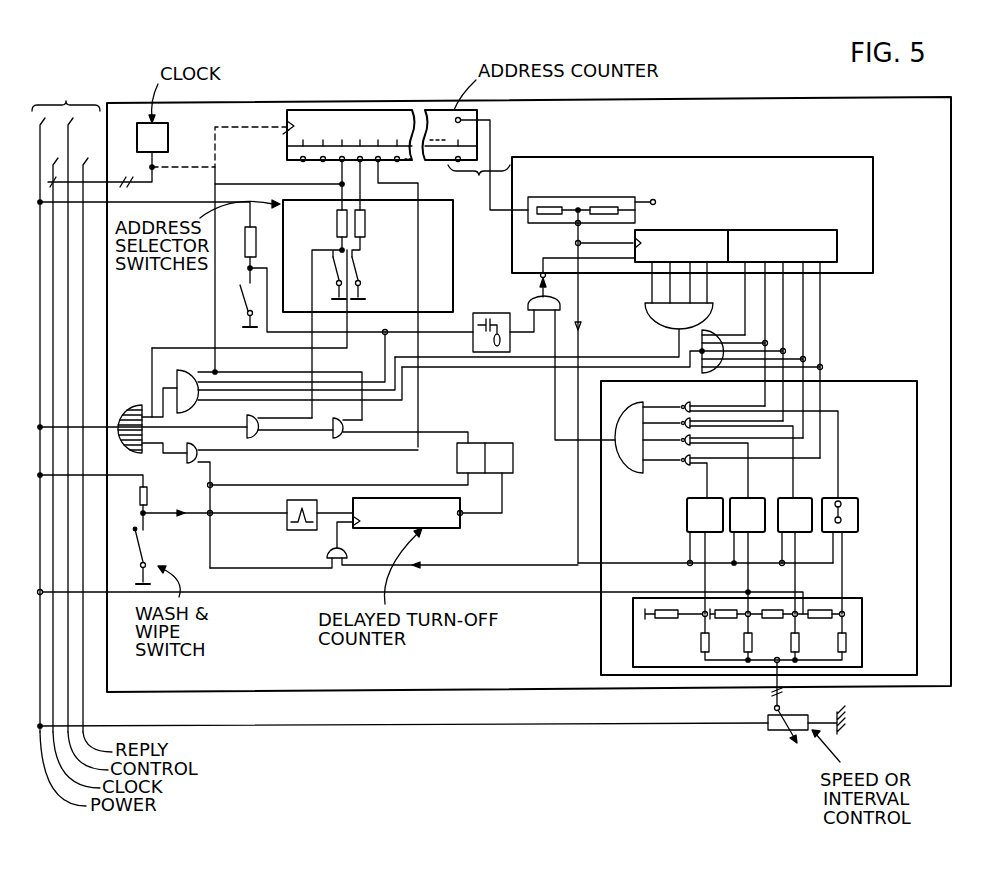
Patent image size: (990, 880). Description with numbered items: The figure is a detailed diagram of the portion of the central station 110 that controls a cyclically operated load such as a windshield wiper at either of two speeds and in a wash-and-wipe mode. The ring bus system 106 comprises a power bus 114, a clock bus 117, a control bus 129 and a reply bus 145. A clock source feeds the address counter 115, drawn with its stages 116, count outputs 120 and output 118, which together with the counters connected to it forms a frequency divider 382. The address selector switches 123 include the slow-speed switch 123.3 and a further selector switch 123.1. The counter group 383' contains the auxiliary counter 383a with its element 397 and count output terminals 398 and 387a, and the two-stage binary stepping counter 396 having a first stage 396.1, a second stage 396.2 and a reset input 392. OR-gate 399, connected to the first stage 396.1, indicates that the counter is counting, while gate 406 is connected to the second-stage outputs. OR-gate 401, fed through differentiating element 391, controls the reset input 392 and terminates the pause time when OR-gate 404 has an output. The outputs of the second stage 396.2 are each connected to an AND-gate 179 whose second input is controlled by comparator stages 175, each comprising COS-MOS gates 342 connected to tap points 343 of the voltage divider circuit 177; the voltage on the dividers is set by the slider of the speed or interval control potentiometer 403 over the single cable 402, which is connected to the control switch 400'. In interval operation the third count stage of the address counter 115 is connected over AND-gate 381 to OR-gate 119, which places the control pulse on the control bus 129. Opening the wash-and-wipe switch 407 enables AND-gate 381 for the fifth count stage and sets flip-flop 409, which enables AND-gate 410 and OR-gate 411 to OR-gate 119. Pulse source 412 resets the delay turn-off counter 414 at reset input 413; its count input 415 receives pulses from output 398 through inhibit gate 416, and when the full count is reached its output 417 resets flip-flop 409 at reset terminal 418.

The central station 110 is at (140, 687).
The power bus 114 is at (46, 420).
The clock bus 117 is at (58, 437).
The control bus 129 is at (85, 420).
The acknowledge or reply bus 145 is at (95, 437).
The ring bus system 106 is at (66, 98).
The address counter 115 is at (287, 118).
The address counter stage 116 is at (284, 133).
The address counter outputs 120 is at (287, 160).
The address counter final output 118 is at (461, 119).
The frequency divider 382 is at (479, 183).
The interval switch 123 is at (452, 220).
The address selector switch 123.3 is at (326, 259).
The selector switch 123.1 is at (242, 286).
The counter unit or auxiliary counter group 383' is at (714, 215).
The auxiliary counter 383a is at (582, 197).
The resistor 397 is at (628, 189).
The count output terminal 387a is at (655, 200).
The count output terminal 398 is at (577, 226).
The reset input 392 is at (542, 272).
The stepping counter 396 is at (726, 230).
The first counter stage 396.1 is at (661, 230).
The second counter stage 396.2 is at (810, 230).
The OR-gate 399 is at (648, 305).
The gate 406 is at (718, 330).
The OR-gate 401 is at (527, 303).
The C/R differentiating element 391 is at (473, 344).
The OR-gate 119 is at (135, 408).
The AND-gate 381 is at (188, 378).
The OR-gate 411 is at (249, 419).
The AND-gate 410 is at (335, 422).
The bistable flip-flop 409 is at (482, 443).
The reset terminal 418 is at (504, 478).
The delay turn-off counter 414 is at (448, 529).
The reset input 413 is at (352, 512).
The count input 415 is at (359, 529).
The output terminal 417 is at (463, 517).
The pulse source 412 is at (287, 526).
The inhibit gate 416 is at (327, 556).
The wash-and-wipe switch 407 is at (144, 543).
The control switch 400' is at (759, 515).
The OR-gate 404 is at (630, 413).
The AND-gate 179 is at (681, 405).
The comparator stage 175 is at (711, 499).
The COS-MOS gate 342 is at (841, 504).
The voltage divider circuit 177 is at (858, 617).
The tap point 343 is at (840, 618).
The connecting cable 402 is at (780, 690).
The speed or interval control potentiometer 403 is at (768, 720).